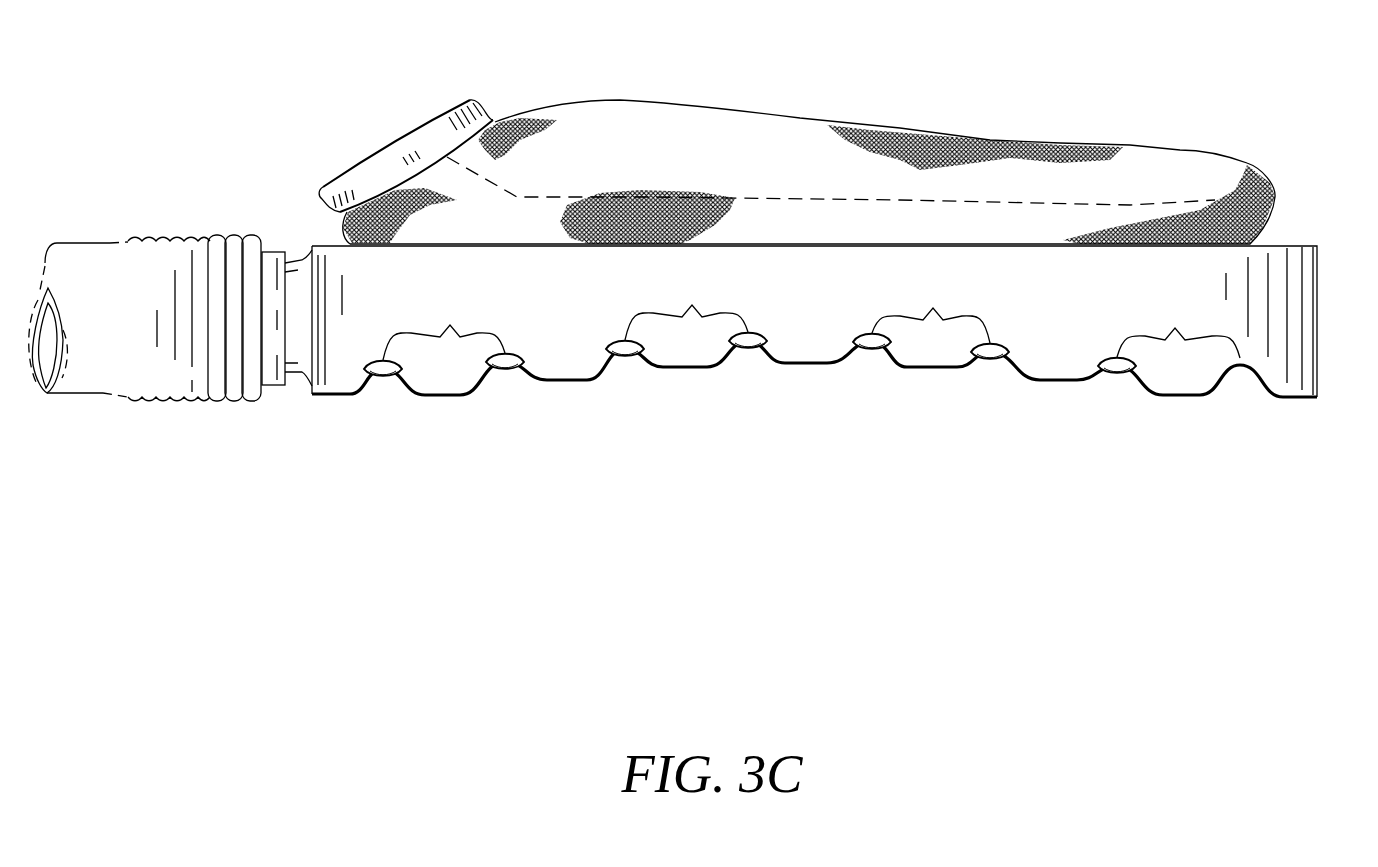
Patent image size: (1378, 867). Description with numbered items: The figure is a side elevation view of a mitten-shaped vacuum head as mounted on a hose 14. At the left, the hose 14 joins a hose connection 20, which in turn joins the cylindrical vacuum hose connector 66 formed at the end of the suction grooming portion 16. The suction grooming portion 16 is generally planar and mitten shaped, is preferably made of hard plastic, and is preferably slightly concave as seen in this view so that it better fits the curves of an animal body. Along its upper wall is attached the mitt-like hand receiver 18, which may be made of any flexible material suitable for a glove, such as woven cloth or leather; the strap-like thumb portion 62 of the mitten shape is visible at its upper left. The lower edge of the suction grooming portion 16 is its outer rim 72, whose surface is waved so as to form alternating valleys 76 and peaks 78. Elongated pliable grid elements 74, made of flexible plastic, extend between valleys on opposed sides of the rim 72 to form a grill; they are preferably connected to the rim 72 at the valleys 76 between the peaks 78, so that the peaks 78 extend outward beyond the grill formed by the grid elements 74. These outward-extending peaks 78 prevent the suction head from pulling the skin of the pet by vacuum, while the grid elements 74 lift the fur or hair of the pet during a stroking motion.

The hose 14 is at (110, 311).
The suction grooming portion 16 is at (1238, 278).
The hand receiver 18 is at (1003, 140).
The hose connection 20 is at (273, 385).
The thumb portion 62 is at (438, 118).
The vacuum hose connector 66 is at (297, 375).
The outer rim 72 is at (1057, 380).
The grid elements 74 is at (513, 371).
The valleys 76 is at (811, 319).
The peaks 78 is at (441, 395).